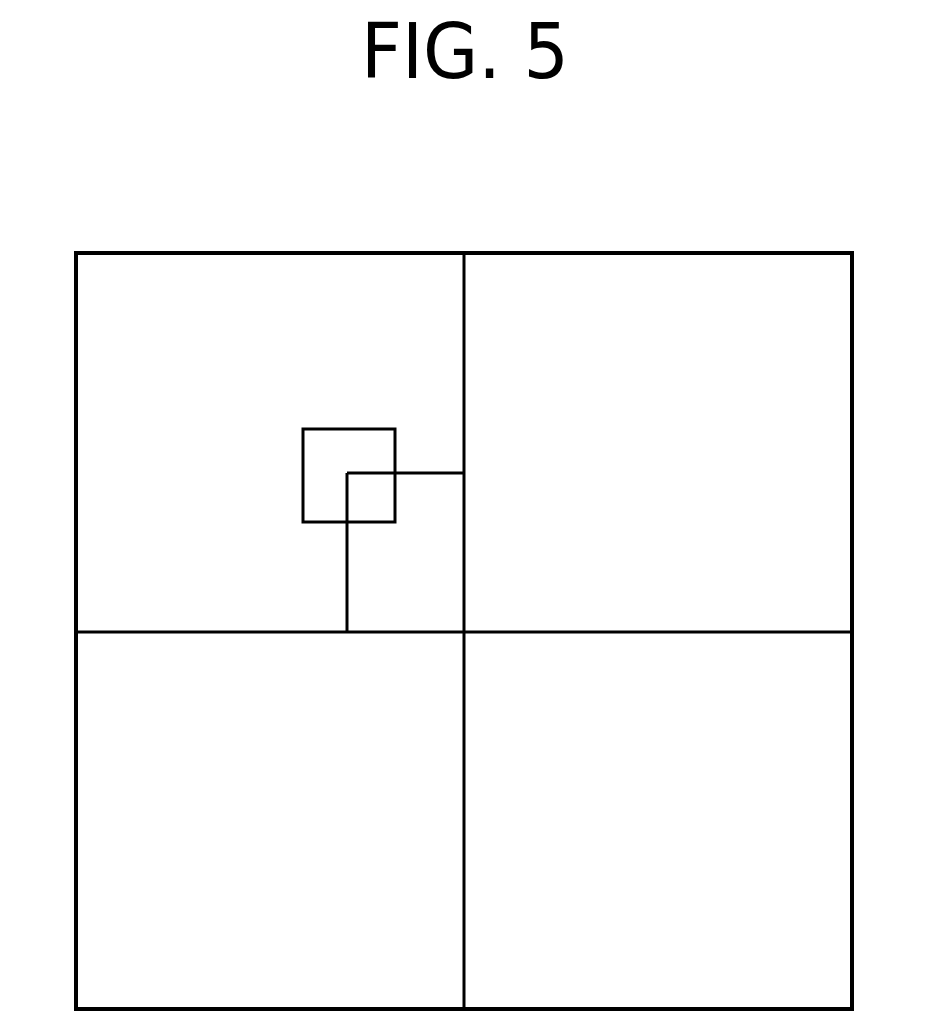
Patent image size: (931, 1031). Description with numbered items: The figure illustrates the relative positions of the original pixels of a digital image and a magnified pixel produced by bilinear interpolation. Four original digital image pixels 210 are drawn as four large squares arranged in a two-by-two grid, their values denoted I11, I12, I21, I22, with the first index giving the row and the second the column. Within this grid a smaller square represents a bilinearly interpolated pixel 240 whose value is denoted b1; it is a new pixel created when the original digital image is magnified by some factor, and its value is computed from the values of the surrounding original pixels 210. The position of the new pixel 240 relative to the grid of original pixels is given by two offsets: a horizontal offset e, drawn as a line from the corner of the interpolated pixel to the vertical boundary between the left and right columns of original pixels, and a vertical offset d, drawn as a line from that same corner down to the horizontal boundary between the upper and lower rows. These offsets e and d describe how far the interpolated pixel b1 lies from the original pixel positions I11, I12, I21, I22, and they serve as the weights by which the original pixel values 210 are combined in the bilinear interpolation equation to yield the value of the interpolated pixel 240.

The original digital image pixels 210 is at (153, 355).
The bilinearly interpolated pixel 240 is at (343, 348).
The original pixel value I11 is at (153, 377).
The original pixel value I12 is at (769, 377).
The original pixel value I21 is at (154, 915).
The original pixel value I22 is at (769, 916).
The interpolated pixel value b1 is at (340, 378).
The horizontal offset e is at (422, 469).
The vertical offset d is at (344, 581).